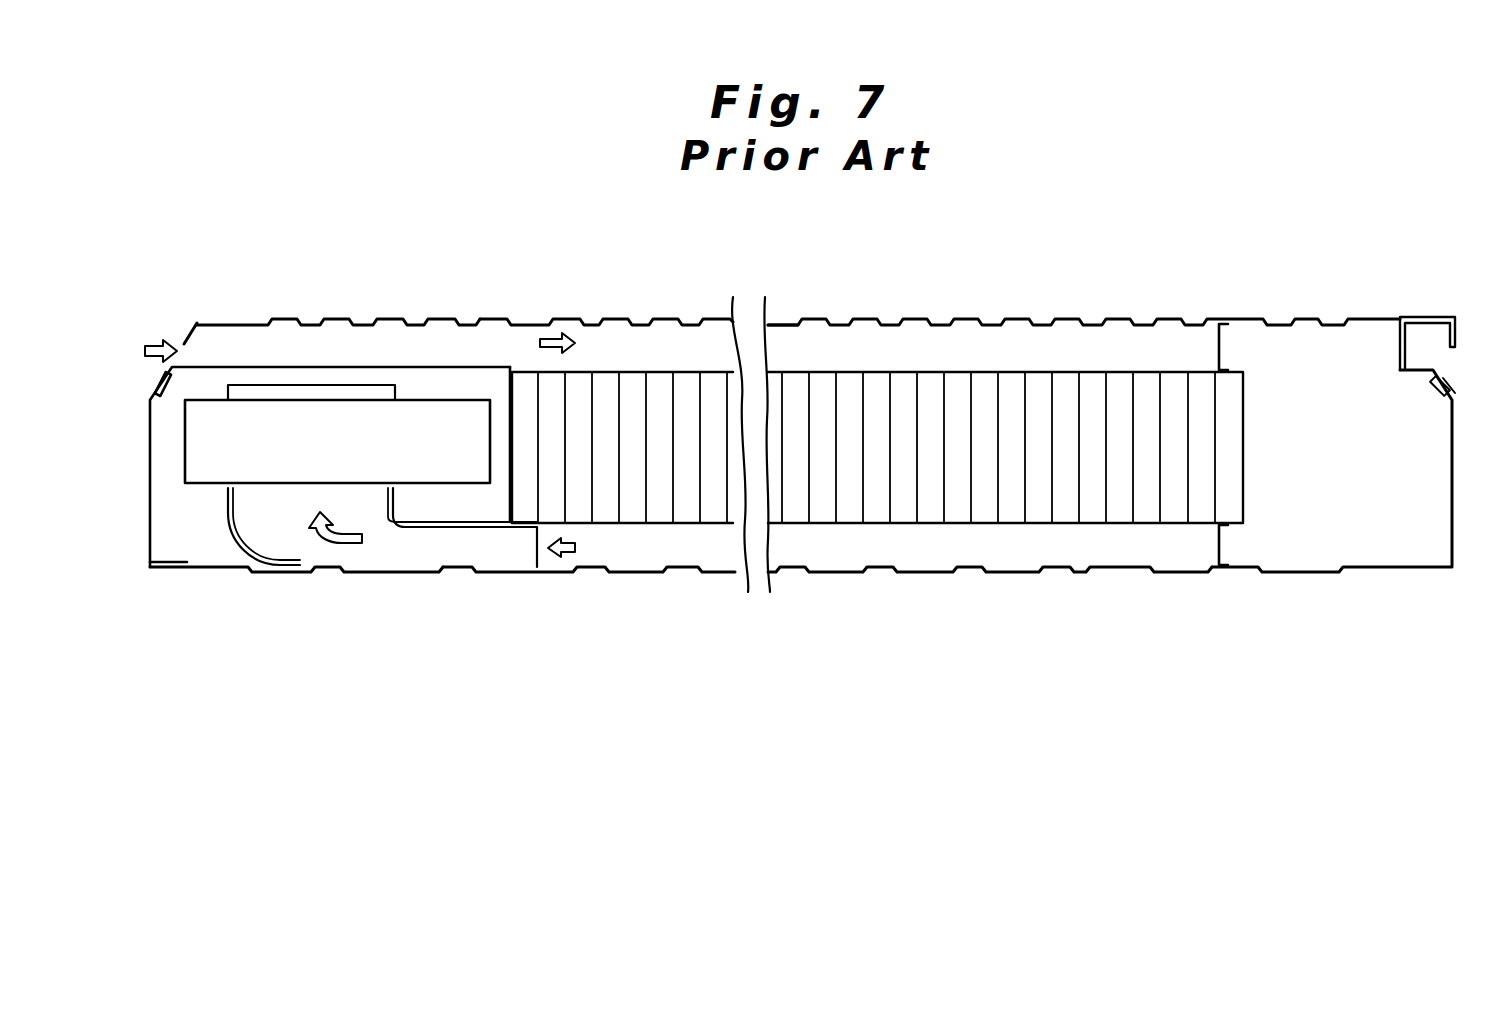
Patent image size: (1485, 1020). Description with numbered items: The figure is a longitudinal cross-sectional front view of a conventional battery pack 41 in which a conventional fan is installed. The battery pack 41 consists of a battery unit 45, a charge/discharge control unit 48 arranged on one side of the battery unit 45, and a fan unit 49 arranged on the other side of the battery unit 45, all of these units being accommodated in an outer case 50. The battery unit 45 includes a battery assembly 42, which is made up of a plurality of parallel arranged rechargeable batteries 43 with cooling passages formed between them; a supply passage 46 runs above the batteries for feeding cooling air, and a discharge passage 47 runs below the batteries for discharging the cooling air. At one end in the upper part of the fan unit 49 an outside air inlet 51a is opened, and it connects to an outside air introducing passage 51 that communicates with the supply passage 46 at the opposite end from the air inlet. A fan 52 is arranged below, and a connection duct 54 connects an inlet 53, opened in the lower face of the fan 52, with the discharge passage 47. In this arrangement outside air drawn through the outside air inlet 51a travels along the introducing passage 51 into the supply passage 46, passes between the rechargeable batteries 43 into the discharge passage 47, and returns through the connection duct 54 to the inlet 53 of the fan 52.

The battery pack 41 is at (866, 312).
The battery assembly 42 is at (1095, 376).
The rechargeable batteries 43 is at (1063, 378).
The battery unit 45 is at (721, 583).
The supply passage 46 is at (844, 362).
The discharge passage 47 is at (844, 561).
The charge/discharge control unit 48 is at (1300, 576).
The fan unit 49 is at (363, 573).
The outer case 50 is at (662, 320).
The outside air introducing passage 51 is at (332, 343).
The outside air inlet 51a is at (178, 341).
The fan 52 is at (443, 410).
The inlet 53 is at (225, 488).
The connection duct 54 is at (408, 553).